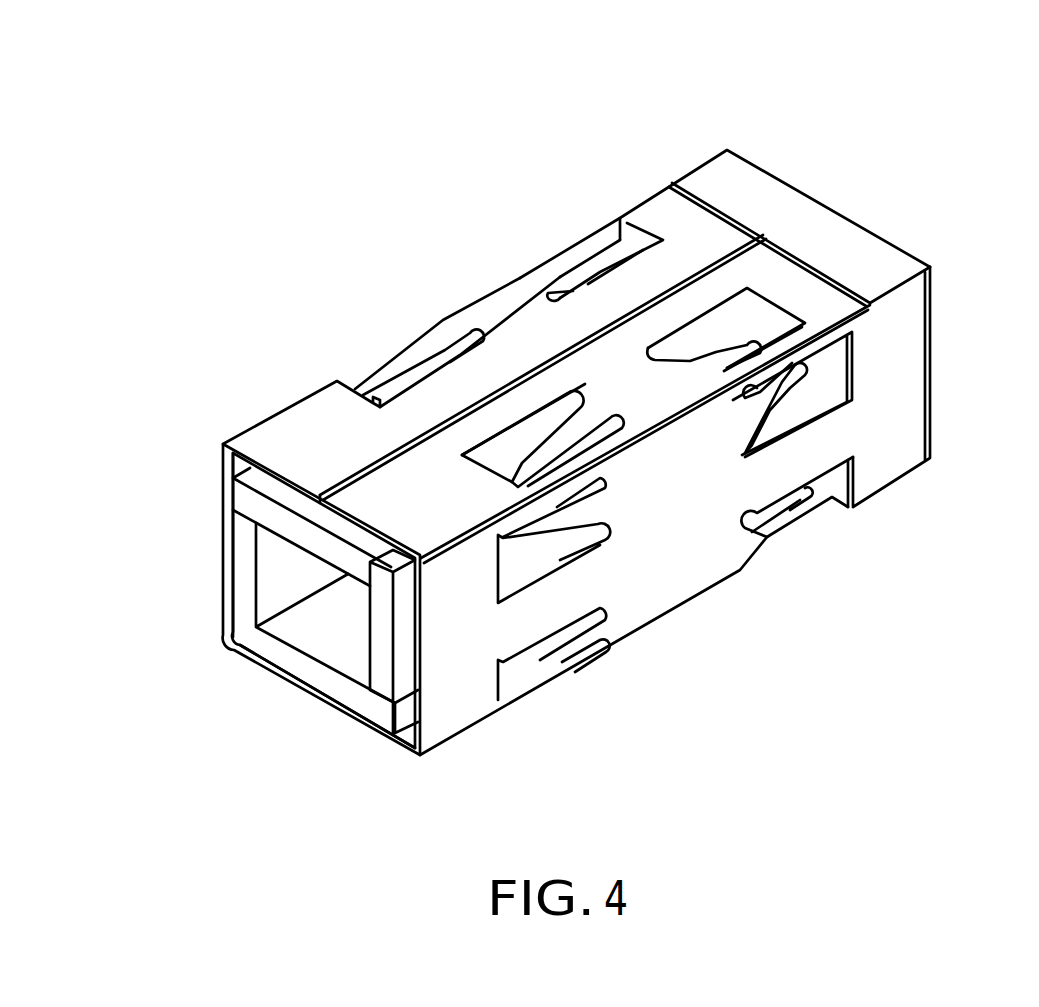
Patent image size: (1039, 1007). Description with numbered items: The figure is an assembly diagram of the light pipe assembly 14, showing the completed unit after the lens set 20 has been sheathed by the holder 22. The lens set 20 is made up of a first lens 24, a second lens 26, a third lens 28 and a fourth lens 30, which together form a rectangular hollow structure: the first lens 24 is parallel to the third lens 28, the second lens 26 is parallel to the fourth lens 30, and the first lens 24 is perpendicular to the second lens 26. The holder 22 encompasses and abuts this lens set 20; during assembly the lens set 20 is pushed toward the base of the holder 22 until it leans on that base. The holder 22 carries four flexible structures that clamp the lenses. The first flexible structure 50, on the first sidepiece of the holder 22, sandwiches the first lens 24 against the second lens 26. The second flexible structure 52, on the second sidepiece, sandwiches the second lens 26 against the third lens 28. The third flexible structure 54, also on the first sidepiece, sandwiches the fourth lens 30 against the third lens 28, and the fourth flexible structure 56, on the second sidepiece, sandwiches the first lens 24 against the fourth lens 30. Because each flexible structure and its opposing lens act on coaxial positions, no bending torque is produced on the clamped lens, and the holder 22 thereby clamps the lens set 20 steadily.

The light pipe assembly 14 is at (884, 130).
The lens set 20 is at (290, 655).
The holder 22 is at (686, 230).
The first lens 24 is at (386, 640).
The second lens 26 is at (283, 518).
The third lens 28 is at (247, 593).
The fourth lens 30 is at (323, 675).
The first flexible structure 50 is at (547, 518).
The second flexible structure 52 is at (417, 363).
The third flexible structure 54 is at (573, 642).
The fourth flexible structure 56 is at (568, 453).